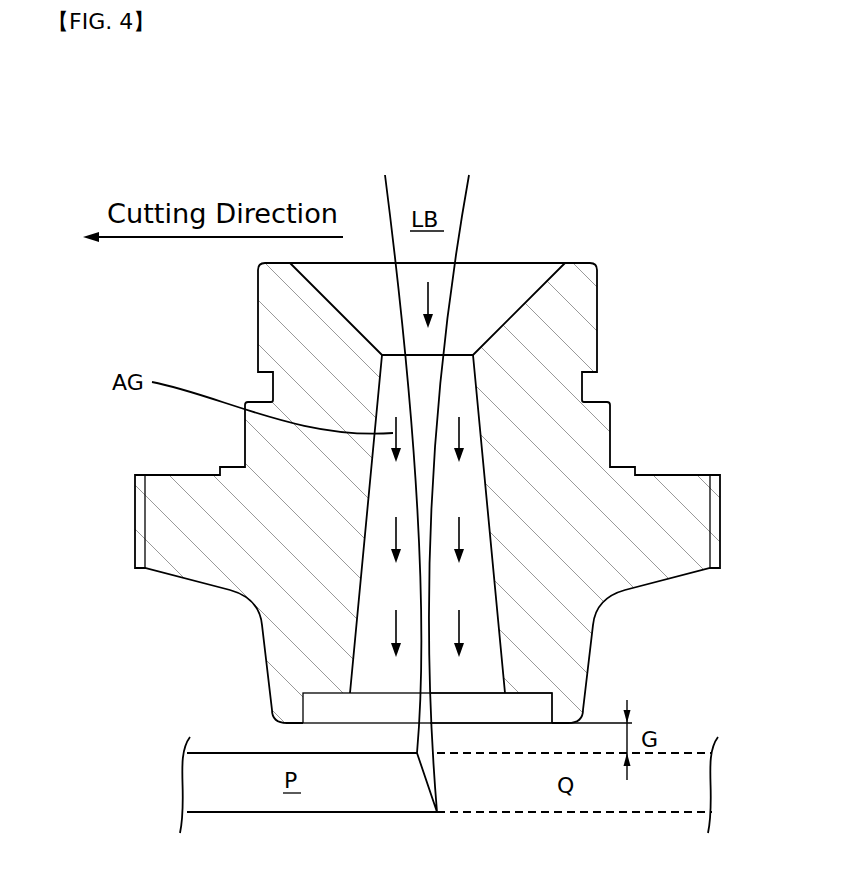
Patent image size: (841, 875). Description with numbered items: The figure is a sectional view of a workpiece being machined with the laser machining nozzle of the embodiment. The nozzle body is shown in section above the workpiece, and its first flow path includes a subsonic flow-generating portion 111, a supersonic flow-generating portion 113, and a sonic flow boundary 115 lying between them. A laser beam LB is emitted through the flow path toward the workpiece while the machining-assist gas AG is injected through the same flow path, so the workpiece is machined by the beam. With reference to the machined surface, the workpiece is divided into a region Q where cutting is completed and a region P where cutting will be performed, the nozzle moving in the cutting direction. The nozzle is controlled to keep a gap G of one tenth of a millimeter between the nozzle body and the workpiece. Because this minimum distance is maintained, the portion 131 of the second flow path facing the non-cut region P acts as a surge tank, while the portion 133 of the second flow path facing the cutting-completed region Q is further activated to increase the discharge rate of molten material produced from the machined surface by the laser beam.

The subsonic flow-generating portion 111 is at (505, 283).
The supersonic flow-generating portion 113 is at (452, 490).
The sonic flow boundary 115 is at (452, 354).
The portion of the second flow path 131 is at (331, 711).
The portion of the second flow path 133 is at (530, 700).